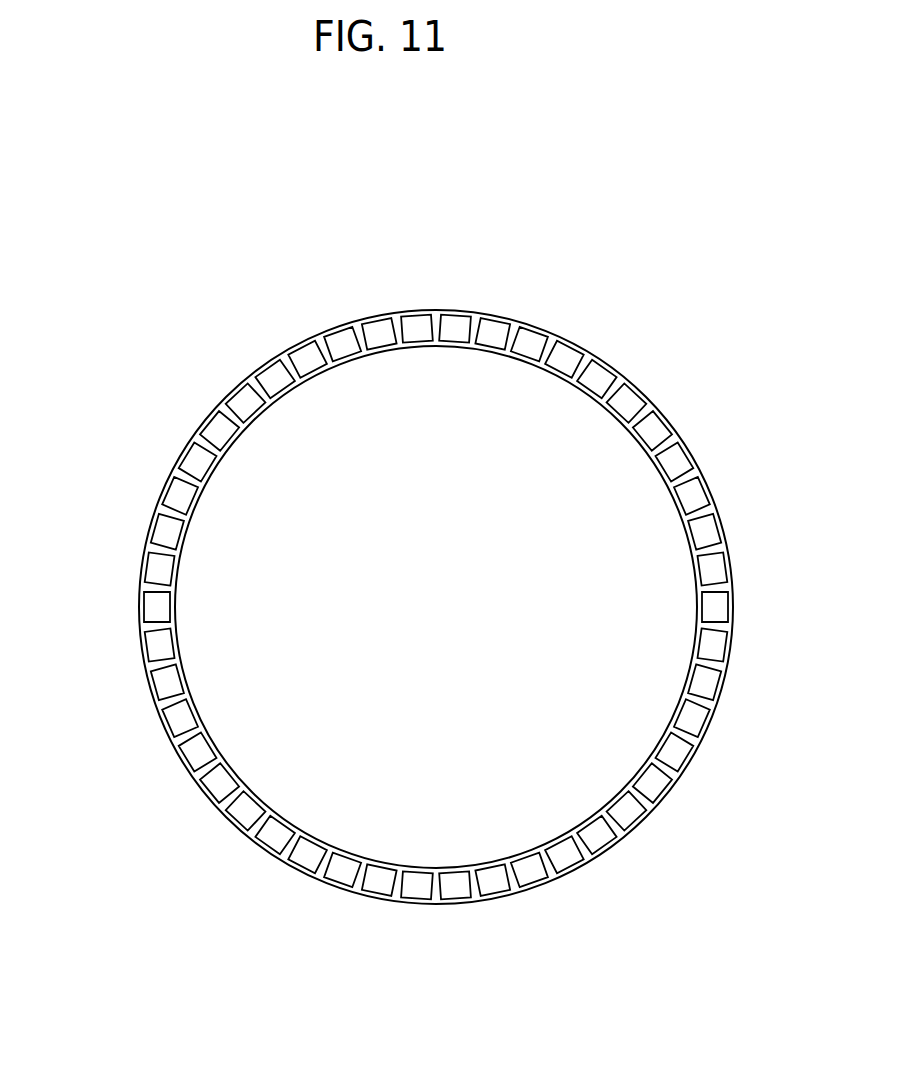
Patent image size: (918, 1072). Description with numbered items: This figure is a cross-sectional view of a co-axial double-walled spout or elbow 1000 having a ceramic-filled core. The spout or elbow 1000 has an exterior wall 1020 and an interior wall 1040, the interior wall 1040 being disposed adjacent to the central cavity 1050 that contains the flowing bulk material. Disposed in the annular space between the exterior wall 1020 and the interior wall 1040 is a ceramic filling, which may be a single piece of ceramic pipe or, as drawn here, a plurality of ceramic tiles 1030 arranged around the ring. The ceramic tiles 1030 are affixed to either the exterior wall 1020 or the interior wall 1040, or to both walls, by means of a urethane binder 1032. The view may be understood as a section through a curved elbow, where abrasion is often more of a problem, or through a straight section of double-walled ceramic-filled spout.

The double-walled spout or elbow 1000 is at (688, 413).
The exterior wall 1020 is at (762, 528).
The ceramic tiles 1030 is at (197, 463).
The urethane binder 1032 is at (258, 380).
The interior wall 1040 is at (260, 412).
The cavity 1050 is at (405, 645).